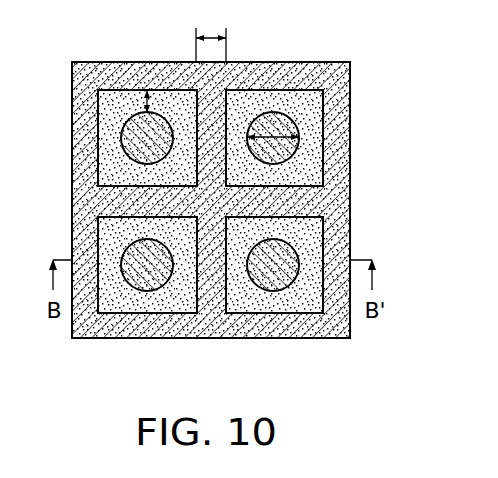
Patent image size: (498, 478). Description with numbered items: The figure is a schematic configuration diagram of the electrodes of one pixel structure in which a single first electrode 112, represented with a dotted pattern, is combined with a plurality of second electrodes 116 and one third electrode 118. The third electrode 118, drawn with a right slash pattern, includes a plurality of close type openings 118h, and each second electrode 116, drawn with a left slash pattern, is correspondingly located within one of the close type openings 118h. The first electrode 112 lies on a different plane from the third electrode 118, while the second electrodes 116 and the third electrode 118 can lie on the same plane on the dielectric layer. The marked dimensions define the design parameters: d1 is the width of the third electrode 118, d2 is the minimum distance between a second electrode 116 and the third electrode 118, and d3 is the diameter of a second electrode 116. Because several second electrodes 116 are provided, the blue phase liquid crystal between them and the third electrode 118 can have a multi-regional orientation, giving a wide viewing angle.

The first electrode 112 is at (350, 92).
The third electrode 118 is at (340, 132).
The close type openings 118h is at (306, 233).
The second electrode 116 is at (296, 152).
The width of the third electrode d1 is at (211, 34).
The minimum distance between the second electrode and the third electrode d2 is at (147, 100).
The diameter of the second electrode d3 is at (277, 137).